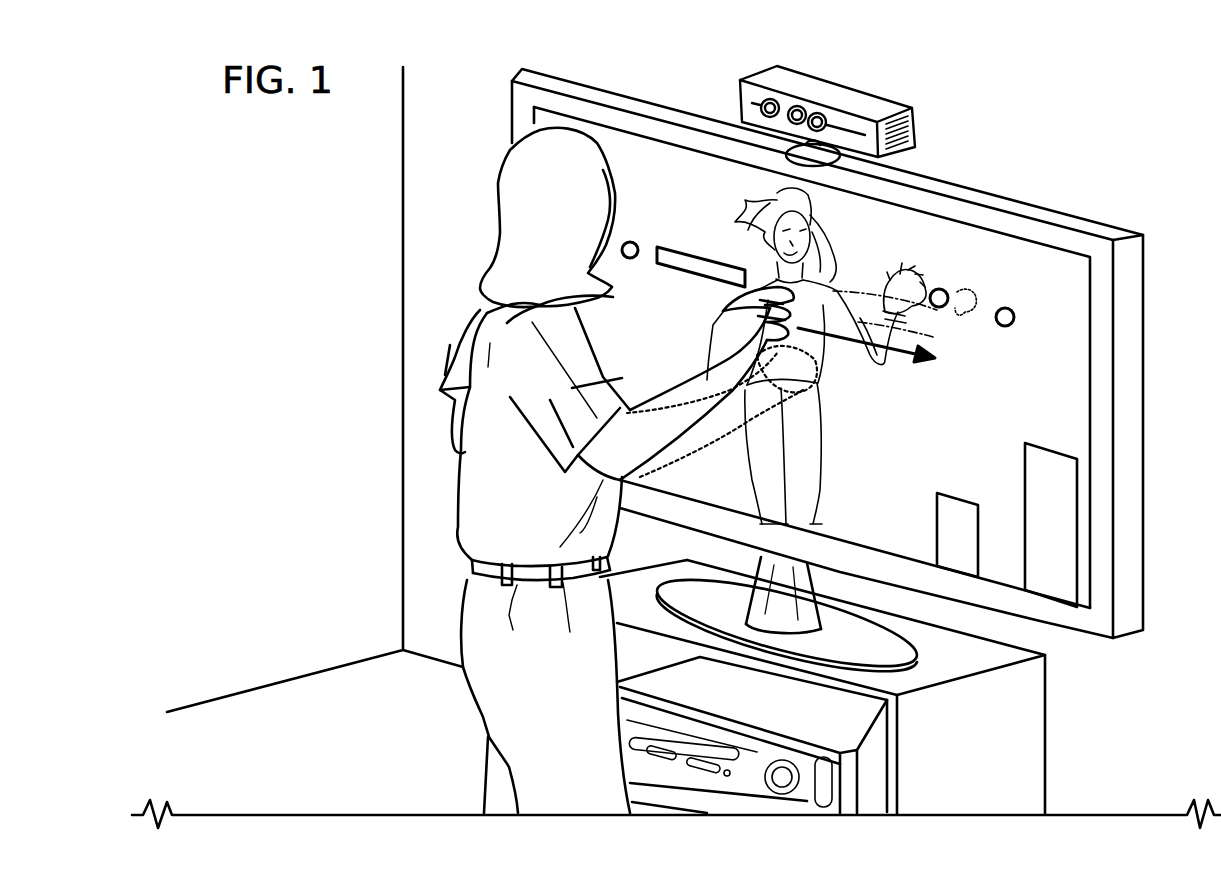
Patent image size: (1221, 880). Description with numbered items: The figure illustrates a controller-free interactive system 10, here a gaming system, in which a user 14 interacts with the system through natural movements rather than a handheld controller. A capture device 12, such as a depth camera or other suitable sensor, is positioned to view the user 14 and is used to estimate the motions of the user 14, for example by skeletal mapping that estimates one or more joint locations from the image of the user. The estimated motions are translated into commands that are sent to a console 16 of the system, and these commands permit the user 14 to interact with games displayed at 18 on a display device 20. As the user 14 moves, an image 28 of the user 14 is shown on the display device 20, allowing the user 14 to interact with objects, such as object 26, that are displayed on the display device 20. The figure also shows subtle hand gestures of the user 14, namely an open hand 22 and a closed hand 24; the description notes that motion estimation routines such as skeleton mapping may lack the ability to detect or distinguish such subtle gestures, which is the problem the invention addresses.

The controller-free interactive system 10 is at (1115, 108).
The capture device 12 is at (860, 98).
The user 14 is at (473, 508).
The console 16 is at (841, 732).
The games displayed 18 is at (1027, 294).
The display device 20 is at (1128, 436).
The open hand 22 is at (722, 320).
The closed hand 24 is at (800, 357).
The object 26 is at (1005, 306).
The image of user 28 is at (807, 433).